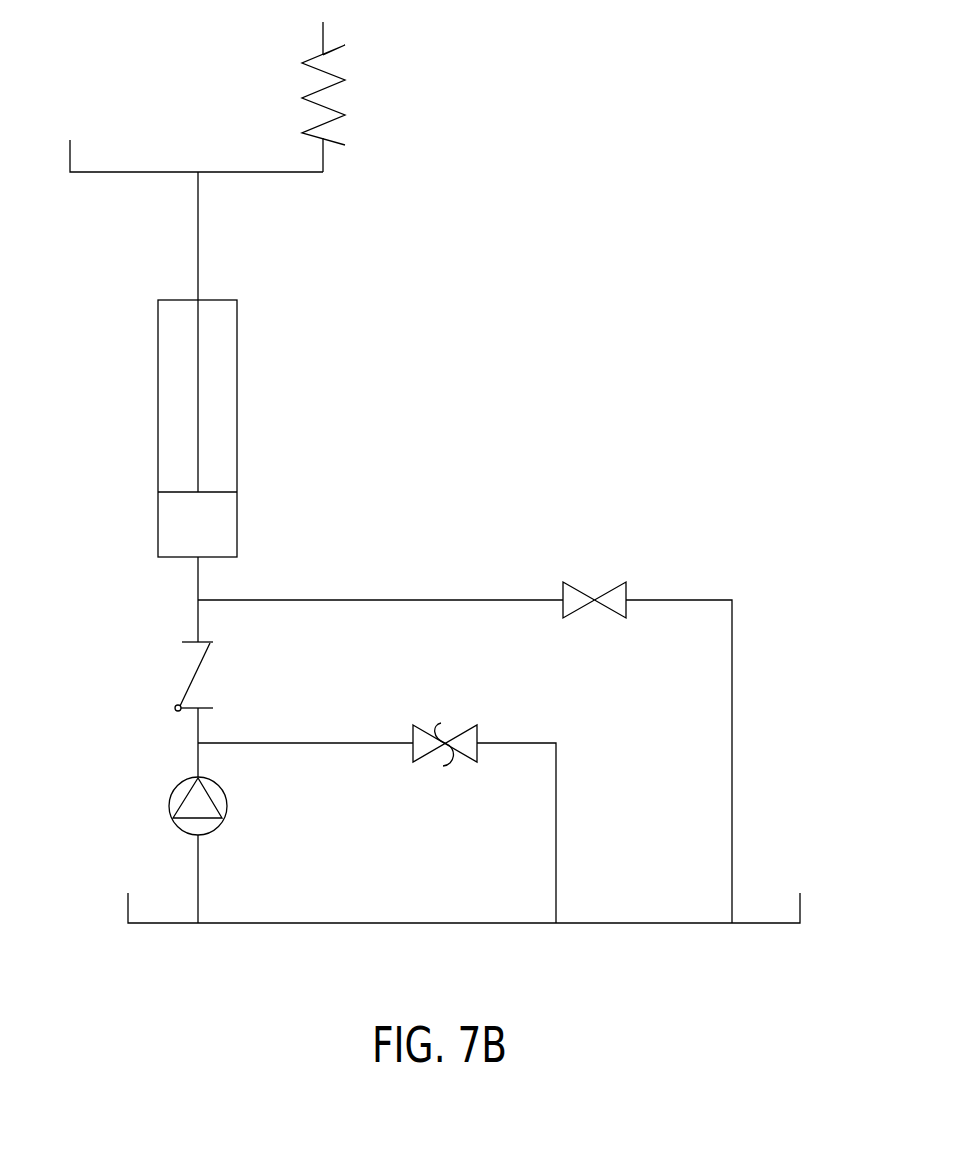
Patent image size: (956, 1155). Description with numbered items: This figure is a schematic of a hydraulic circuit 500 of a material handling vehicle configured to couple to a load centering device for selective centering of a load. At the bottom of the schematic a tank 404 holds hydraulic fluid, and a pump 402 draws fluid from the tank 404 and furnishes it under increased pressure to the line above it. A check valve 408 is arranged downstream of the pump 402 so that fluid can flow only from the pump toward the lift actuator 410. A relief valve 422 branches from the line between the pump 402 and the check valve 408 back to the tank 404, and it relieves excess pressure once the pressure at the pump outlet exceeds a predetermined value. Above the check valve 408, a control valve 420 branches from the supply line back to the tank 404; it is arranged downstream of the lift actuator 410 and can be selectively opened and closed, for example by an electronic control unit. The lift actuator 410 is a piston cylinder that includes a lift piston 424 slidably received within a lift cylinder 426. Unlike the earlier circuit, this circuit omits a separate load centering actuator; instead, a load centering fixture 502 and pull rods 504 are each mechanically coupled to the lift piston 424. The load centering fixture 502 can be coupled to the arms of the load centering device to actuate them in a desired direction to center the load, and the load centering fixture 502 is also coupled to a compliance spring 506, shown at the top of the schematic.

The hydraulic circuit 500 is at (562, 141).
The load centering fixture 502 is at (323, 42).
The pull rods 504 is at (70, 155).
The compliance spring 506 is at (323, 93).
The lift actuator 410 is at (281, 424).
The lift piston 424 is at (198, 244).
The lift cylinder 426 is at (237, 453).
The control valve 420 is at (612, 590).
The relief valve 422 is at (443, 722).
The check valve 408 is at (205, 662).
The pump 402 is at (217, 822).
The tank 404 is at (467, 923).